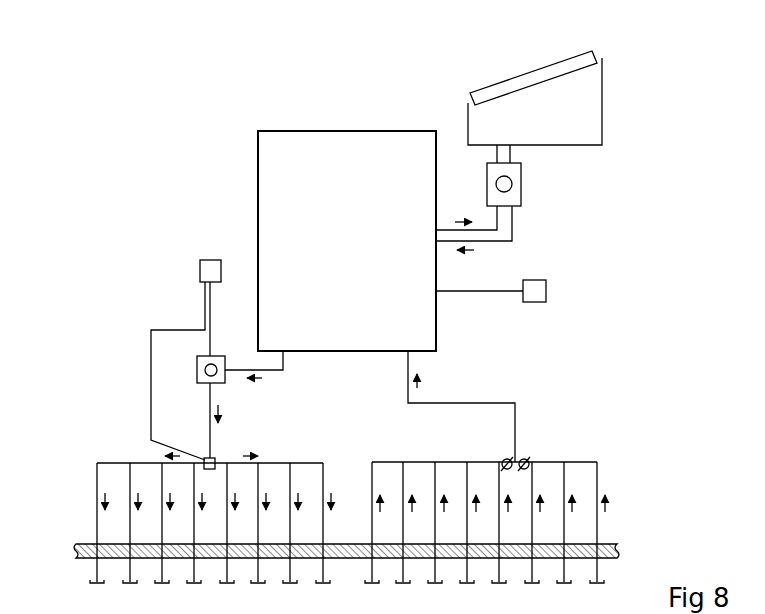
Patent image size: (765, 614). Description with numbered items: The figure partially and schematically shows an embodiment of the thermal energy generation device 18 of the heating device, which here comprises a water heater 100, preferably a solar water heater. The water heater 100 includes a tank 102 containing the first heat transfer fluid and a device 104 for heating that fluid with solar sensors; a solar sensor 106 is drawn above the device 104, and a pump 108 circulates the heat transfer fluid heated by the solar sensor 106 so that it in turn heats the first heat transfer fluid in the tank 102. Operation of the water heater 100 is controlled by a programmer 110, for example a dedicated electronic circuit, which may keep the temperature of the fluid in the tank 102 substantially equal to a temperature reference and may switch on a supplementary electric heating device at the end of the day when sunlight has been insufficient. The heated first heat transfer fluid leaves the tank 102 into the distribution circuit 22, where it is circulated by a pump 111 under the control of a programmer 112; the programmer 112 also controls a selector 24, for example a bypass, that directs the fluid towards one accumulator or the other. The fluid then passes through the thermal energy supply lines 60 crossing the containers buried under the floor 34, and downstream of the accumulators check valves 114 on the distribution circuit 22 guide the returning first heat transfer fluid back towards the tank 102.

The thermal energy generation device 18 is at (189, 149).
The distribution circuit 22 is at (492, 401).
The selector 24 is at (214, 458).
The floor 34 is at (612, 543).
The thermal energy supply line 60 is at (93, 564).
The water heater 100 is at (313, 129).
The tank 102 is at (387, 143).
The device for heating the first heat transfer fluid with solar sensors 104 is at (504, 76).
The solar sensor 106 is at (568, 68).
The pump 108 is at (522, 188).
The programmer 110 is at (546, 291).
The pump 111 is at (197, 372).
The programmer 112 is at (199, 271).
The check valves 114 is at (503, 460).